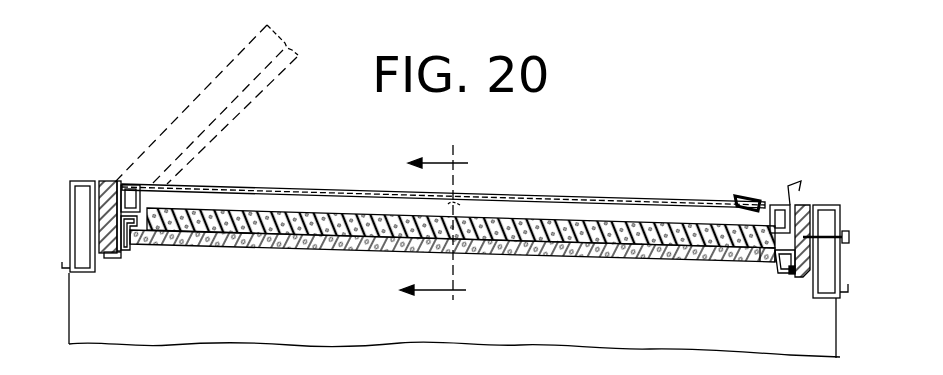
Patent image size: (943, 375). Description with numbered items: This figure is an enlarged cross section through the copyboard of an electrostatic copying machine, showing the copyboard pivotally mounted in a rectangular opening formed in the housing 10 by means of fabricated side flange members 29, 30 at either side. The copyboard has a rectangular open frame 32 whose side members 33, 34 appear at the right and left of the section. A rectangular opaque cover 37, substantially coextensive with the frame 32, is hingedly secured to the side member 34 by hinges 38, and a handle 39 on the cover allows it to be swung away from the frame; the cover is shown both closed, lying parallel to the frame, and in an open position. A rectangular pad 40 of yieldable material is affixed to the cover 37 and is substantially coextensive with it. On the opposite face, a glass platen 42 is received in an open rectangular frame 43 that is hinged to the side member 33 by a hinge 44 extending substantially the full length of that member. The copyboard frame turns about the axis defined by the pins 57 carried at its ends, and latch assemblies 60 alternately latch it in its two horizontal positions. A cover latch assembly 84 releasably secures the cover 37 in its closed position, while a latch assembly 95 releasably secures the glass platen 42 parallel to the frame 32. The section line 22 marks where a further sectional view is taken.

The housing 10 is at (292, 312).
The section line 22- 22 is at (412, 217).
The side flange member 29 is at (841, 287).
The side flange member 30 is at (70, 212).
The frame 32 is at (810, 202).
The side member 33 is at (797, 276).
The side member 34 is at (105, 230).
The cover 37 is at (228, 60).
The hinge 38 is at (120, 182).
The handle 39 is at (789, 183).
The pad 40 is at (677, 230).
The glass platen 42 is at (563, 255).
The frame 43 is at (762, 262).
The hinge 44 is at (783, 273).
The pin 57 is at (462, 203).
The latch assembly 60 is at (849, 231).
The cover latch assembly 84 is at (737, 193).
The latch assembly 95 is at (112, 258).